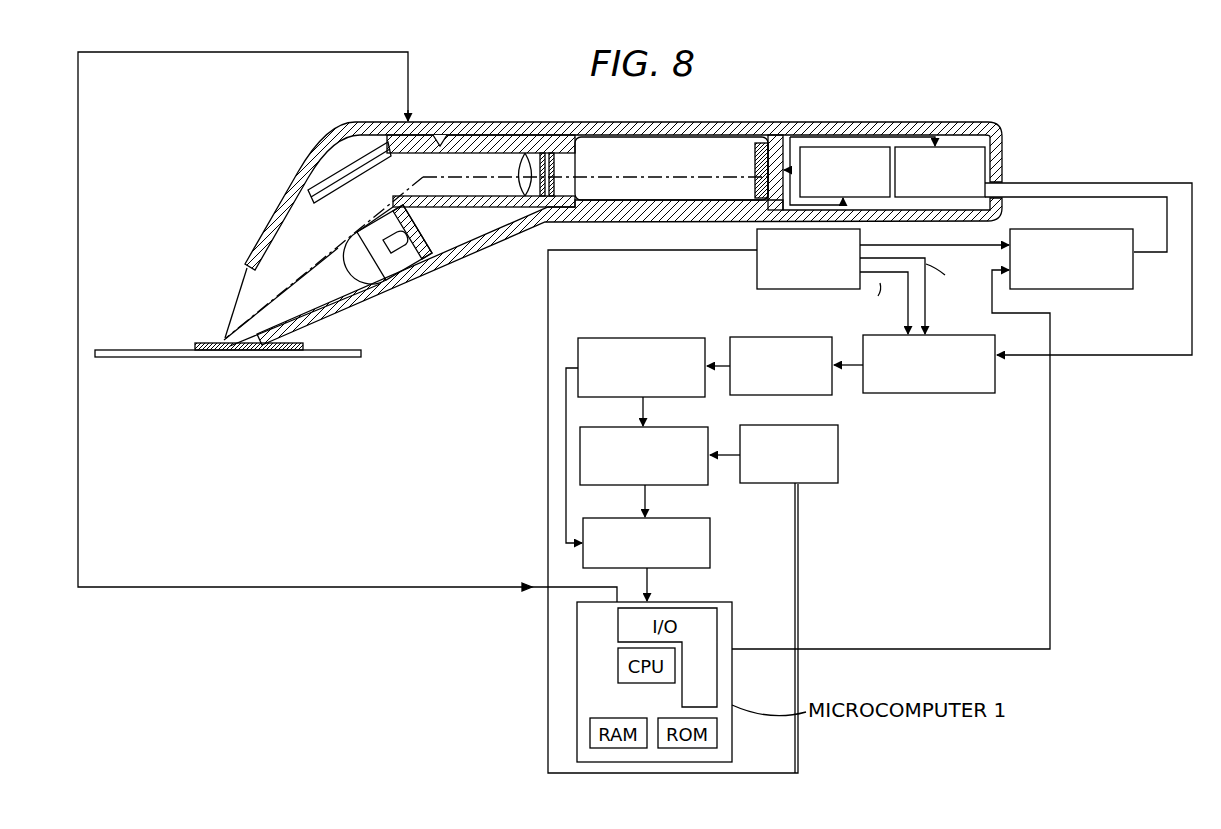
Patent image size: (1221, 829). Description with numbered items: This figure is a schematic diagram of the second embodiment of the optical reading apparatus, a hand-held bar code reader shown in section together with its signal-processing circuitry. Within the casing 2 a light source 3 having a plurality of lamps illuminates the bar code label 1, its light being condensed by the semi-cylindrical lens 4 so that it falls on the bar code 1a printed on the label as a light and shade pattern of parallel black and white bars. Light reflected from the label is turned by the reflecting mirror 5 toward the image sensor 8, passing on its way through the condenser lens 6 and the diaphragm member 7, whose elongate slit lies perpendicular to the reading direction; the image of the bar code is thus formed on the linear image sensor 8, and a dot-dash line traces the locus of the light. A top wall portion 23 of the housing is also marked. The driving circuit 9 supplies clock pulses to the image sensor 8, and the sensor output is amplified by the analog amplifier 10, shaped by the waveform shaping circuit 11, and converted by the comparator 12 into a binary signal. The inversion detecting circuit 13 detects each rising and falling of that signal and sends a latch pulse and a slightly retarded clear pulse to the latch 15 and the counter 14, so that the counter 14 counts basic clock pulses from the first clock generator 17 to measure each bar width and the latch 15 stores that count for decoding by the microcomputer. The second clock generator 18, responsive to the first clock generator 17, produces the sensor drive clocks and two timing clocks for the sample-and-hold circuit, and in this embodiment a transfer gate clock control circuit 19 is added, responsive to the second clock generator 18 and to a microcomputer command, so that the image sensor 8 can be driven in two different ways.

The bar code label 1 is at (328, 358).
The bar code 1a is at (205, 343).
The casing 2 is at (460, 134).
The light source 3 is at (408, 252).
The semi-cylindrical lens 4 is at (336, 270).
The reflecting mirror 5 is at (340, 179).
The condenser lens 6 is at (518, 168).
The diaphragm member 7 is at (555, 163).
The image sensor 8 is at (754, 164).
The driving circuit 9 is at (836, 146).
The analog amplifier 10 is at (955, 146).
The waveform shaping circuit 11 is at (996, 355).
The comparator 12 is at (776, 336).
The inversion detecting circuit 13 is at (648, 337).
The counter 14 is at (655, 426).
The latch 15 is at (662, 517).
The first clock generator 17 is at (766, 424).
The second clock generator 18 is at (756, 262).
The transfer gate clock control circuit 19 is at (1075, 289).
The lens barrel / top block 23 is at (400, 134).